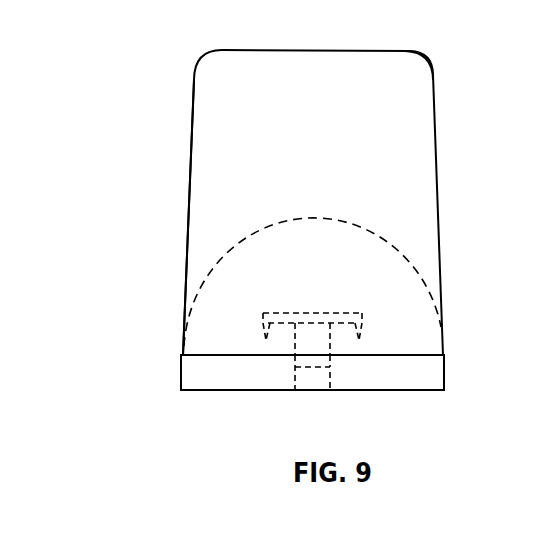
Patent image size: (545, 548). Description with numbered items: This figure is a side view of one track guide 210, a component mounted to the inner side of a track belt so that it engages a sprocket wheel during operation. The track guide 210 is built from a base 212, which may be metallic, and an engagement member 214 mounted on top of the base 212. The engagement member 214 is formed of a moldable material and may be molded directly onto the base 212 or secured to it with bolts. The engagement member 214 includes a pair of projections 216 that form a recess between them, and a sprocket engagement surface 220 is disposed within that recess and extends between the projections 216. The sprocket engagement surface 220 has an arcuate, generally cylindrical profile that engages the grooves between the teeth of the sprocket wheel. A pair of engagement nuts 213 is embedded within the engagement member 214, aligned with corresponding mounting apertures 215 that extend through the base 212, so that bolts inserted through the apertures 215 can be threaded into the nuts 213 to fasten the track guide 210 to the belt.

The track guide 210 is at (193, 93).
The base 212 is at (181, 360).
The engagement nuts 213 is at (314, 313).
The engagement member 214 is at (190, 214).
The mounting apertures 215 is at (330, 377).
The projections 216 is at (428, 63).
The sprocket engagement surface 220 is at (323, 218).